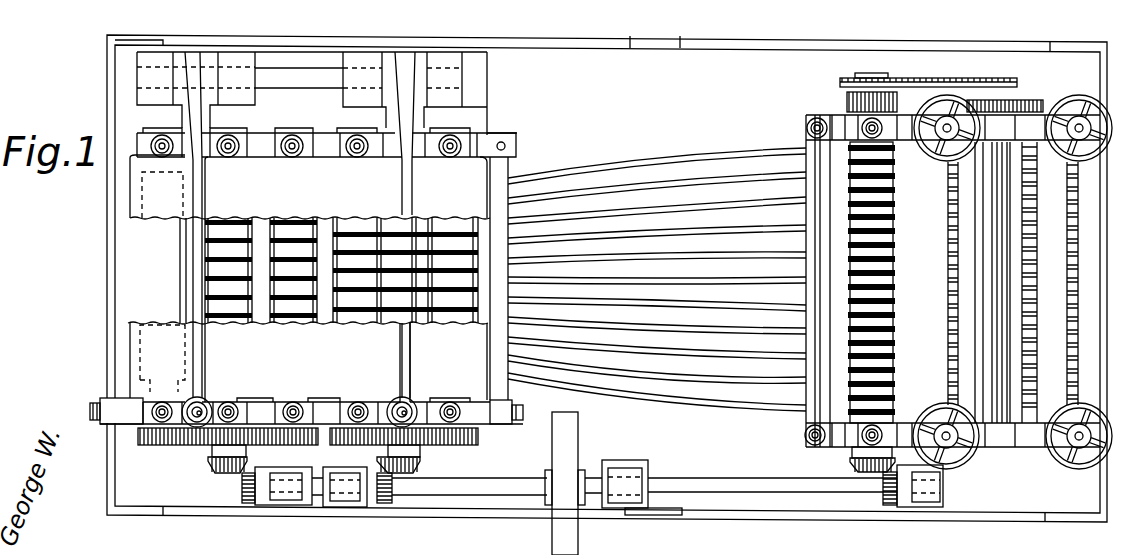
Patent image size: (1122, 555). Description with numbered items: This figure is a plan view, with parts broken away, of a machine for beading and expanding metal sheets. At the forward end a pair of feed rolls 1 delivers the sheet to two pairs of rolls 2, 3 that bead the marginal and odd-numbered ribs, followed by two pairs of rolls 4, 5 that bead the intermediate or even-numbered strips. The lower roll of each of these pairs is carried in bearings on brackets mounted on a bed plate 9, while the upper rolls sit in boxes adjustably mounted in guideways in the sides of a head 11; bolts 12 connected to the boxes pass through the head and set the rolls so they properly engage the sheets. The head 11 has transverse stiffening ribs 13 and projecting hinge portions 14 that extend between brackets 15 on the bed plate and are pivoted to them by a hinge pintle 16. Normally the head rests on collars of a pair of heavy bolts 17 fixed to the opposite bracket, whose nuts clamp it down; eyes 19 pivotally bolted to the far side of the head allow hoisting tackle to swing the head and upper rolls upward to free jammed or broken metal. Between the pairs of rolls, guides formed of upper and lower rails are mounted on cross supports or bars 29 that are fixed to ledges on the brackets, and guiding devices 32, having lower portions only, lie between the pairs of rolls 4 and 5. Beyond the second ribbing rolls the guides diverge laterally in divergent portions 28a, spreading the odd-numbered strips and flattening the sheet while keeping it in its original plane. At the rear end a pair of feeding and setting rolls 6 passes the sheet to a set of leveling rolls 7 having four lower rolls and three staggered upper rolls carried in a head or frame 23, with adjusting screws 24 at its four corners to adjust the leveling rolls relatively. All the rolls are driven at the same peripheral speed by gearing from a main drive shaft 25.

The feed rolls 1 is at (152, 231).
The rolls for beading marginal and odd-numbered ribs 2 is at (228, 232).
The rolls for beading marginal and odd-numbered ribs 3 is at (288, 230).
The rolls for beading intermediate strips 4 is at (349, 228).
The rolls for beading intermediate strips 5 is at (444, 230).
The feeding and setting rolls 6 is at (895, 222).
The leveling rolls 7 is at (1050, 395).
The bed plate 9 is at (483, 500).
The head 11 is at (138, 198).
The bolts 12 is at (362, 155).
The transverse stiffening ribs 13 is at (410, 187).
The hinge portions 14 is at (187, 55).
The brackets 15 is at (145, 58).
The hinge pintle 16 is at (296, 72).
The heavy bolts 17 is at (200, 406).
The eyes 19 is at (108, 415).
The head or frame 23 is at (1003, 436).
The adjusting screws 24 is at (1079, 128).
The main drive shaft 25 is at (735, 487).
The divergent portions of the guides 28a is at (634, 216).
The cross supports or bars 29 is at (508, 162).
The guiding devices 32 is at (404, 306).